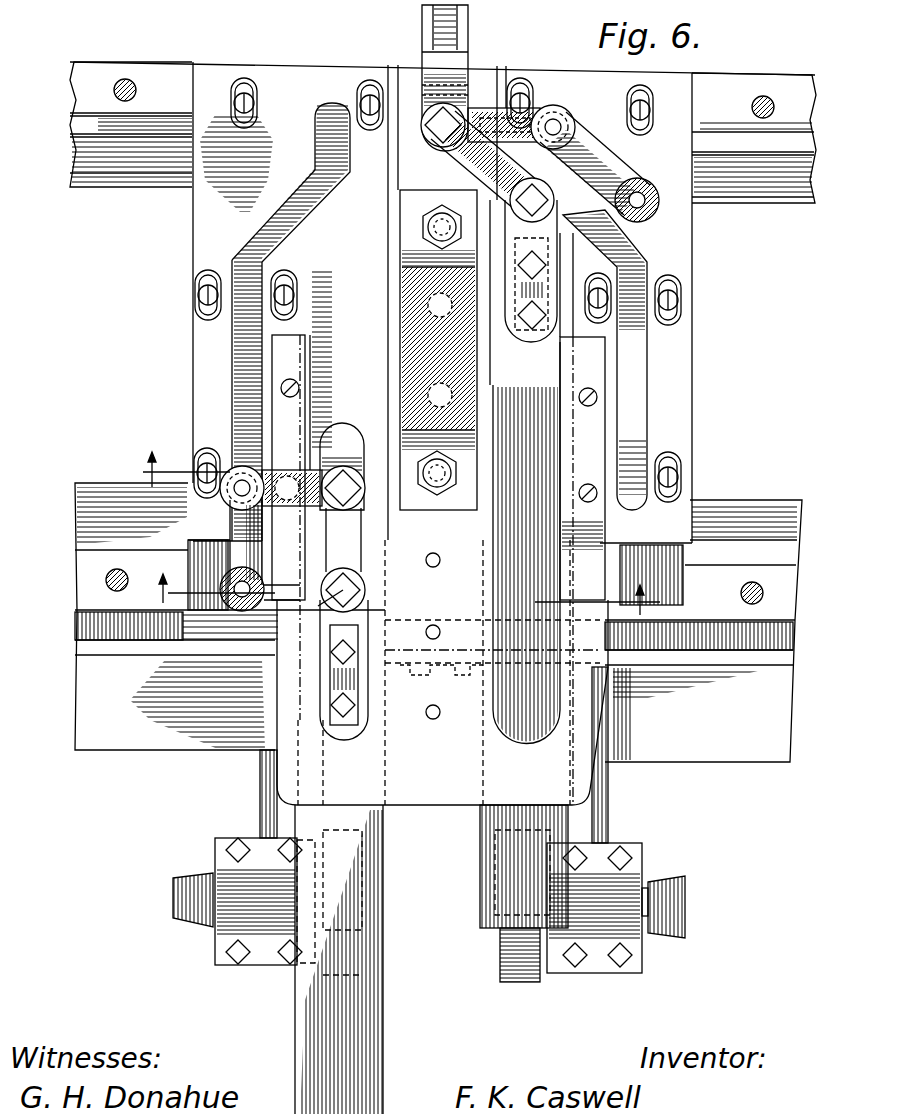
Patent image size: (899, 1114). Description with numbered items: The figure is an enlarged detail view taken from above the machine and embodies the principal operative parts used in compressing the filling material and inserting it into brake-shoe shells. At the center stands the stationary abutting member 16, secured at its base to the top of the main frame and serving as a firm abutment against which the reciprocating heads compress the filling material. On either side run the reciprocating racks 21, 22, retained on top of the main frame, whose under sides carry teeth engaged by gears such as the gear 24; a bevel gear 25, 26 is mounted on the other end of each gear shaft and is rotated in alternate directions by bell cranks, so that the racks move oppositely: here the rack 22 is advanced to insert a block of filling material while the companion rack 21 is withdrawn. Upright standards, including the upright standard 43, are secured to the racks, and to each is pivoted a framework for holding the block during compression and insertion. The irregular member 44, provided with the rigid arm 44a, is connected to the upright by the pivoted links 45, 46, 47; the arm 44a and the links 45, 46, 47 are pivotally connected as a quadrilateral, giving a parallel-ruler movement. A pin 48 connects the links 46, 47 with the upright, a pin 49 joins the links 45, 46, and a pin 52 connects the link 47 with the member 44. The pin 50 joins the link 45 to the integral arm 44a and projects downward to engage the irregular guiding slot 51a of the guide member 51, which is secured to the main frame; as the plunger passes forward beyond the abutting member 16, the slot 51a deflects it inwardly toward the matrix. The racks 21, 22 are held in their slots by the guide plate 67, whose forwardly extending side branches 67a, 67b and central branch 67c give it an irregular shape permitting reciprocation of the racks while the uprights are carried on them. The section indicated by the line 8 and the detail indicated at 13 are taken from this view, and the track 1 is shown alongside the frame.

The rail track 1 is at (160, 76).
The section line 8- 8 is at (395, 596).
The section line 13- 13 is at (173, 469).
The stationary abutting member 16 is at (414, 366).
The reciprocating rack 21 is at (375, 1050).
The reciprocating rack 22 is at (505, 840).
The gear 24 is at (530, 975).
The bevel gear 25 is at (200, 913).
The bevel gear 26 is at (673, 882).
The upright standard 43 is at (545, 238).
The irregular member 44 is at (430, 70).
The rigid arm 44a is at (478, 113).
The pivoted link 45 is at (585, 147).
The pivoted link 46 is at (630, 190).
The pivoted link 47 is at (490, 150).
The pin 48 is at (320, 610).
The pin 49 is at (240, 605).
The guide pin 50 is at (553, 125).
The guide member 51 is at (205, 225).
The guiding slot 51a is at (242, 332).
The pin 52 is at (443, 128).
The guide plate 67 is at (447, 800).
The side branch 67a is at (593, 420).
The side branch 67b is at (283, 353).
The central branch 67c is at (426, 636).